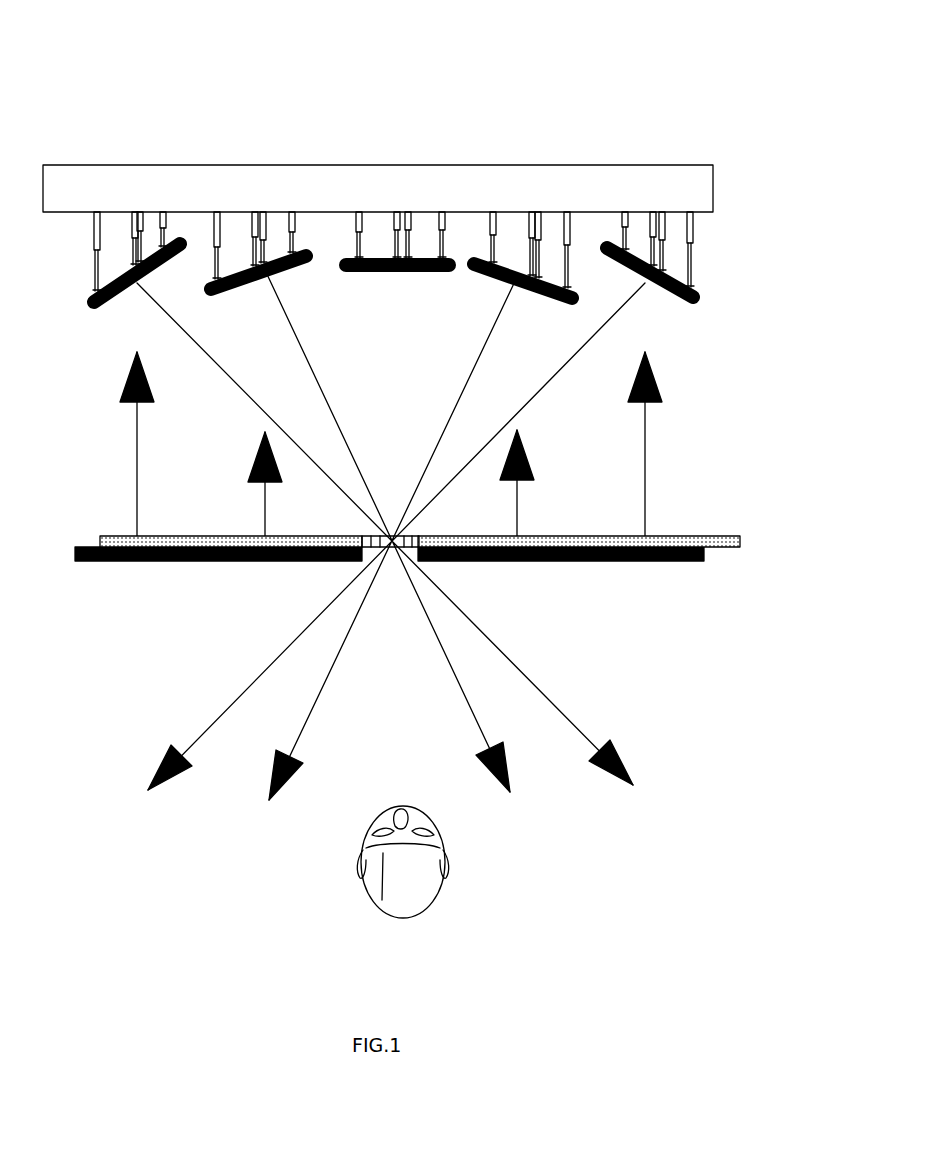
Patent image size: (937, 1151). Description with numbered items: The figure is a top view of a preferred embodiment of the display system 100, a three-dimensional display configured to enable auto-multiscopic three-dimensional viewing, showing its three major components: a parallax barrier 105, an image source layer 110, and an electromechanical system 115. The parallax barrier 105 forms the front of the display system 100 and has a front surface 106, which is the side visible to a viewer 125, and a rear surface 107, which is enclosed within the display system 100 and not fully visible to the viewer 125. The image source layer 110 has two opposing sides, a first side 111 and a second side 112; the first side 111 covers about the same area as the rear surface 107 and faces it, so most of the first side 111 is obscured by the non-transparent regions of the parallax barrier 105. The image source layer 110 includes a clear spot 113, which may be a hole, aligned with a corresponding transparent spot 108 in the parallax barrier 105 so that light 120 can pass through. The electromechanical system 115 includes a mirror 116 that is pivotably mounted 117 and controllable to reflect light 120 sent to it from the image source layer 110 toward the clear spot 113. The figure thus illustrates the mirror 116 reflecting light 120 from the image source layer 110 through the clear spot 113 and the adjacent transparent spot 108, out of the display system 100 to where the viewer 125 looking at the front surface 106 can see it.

The display system 100 is at (100, 72).
The parallax barrier 105 is at (573, 553).
The front surface 106 is at (88, 561).
The rear surface 107 is at (90, 543).
The transparent spot 108 is at (397, 560).
The image source layer 110 is at (665, 543).
The first side 111 is at (713, 550).
The second side 112 is at (715, 532).
The clear spot 113 is at (386, 536).
The electromechanical system 115 is at (471, 182).
The mirror 116 is at (671, 292).
The pivotable mounting 117 is at (688, 220).
The light 120 is at (517, 515).
The viewer 125 is at (430, 897).